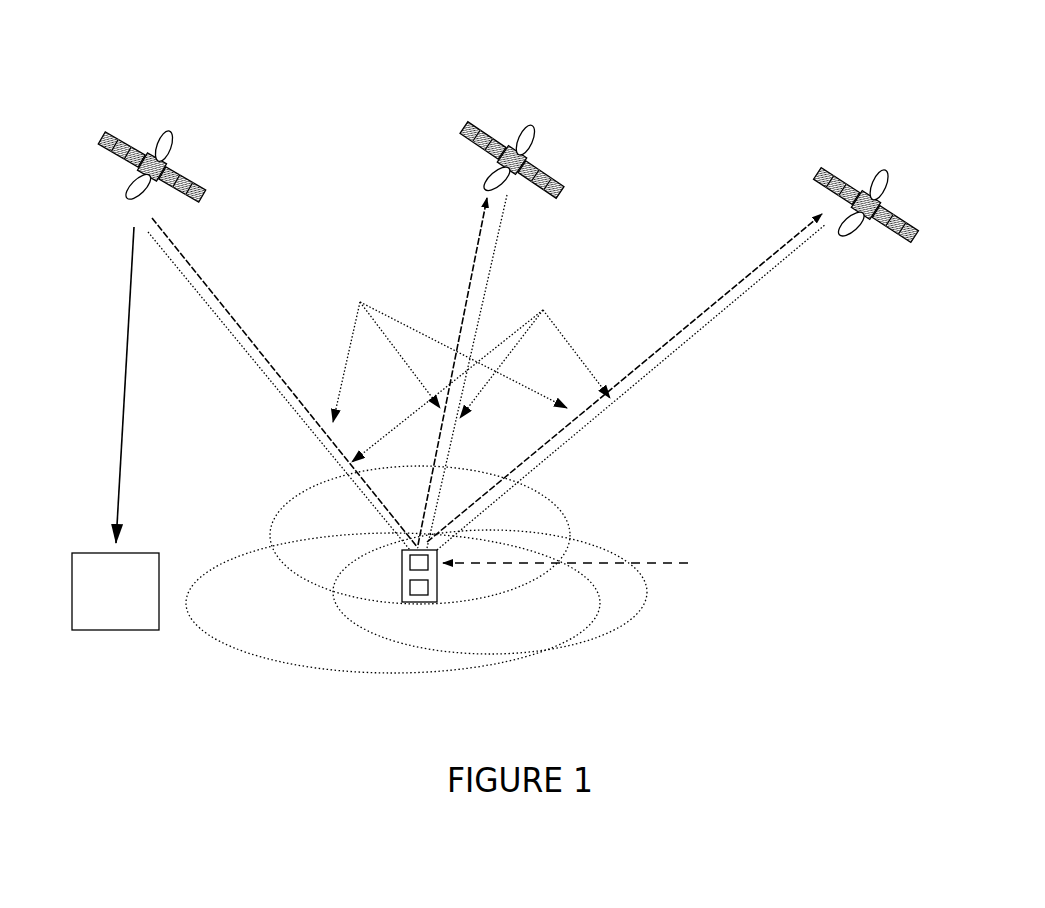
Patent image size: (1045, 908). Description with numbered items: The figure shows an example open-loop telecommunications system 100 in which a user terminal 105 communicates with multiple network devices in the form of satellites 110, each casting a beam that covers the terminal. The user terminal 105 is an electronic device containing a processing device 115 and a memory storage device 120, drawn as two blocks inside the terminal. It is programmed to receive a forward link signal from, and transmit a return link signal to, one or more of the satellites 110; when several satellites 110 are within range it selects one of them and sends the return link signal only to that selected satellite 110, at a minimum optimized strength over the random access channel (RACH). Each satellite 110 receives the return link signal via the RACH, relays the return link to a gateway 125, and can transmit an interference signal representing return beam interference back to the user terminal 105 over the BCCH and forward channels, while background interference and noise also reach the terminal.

The open-loop telecommunications system 100 is at (592, 62).
The satellite 110 is at (487, 170).
The user terminal 105 is at (418, 602).
The processing device 115 is at (430, 563).
The memory storage device 120 is at (428, 588).
The gateway 125 is at (118, 632).